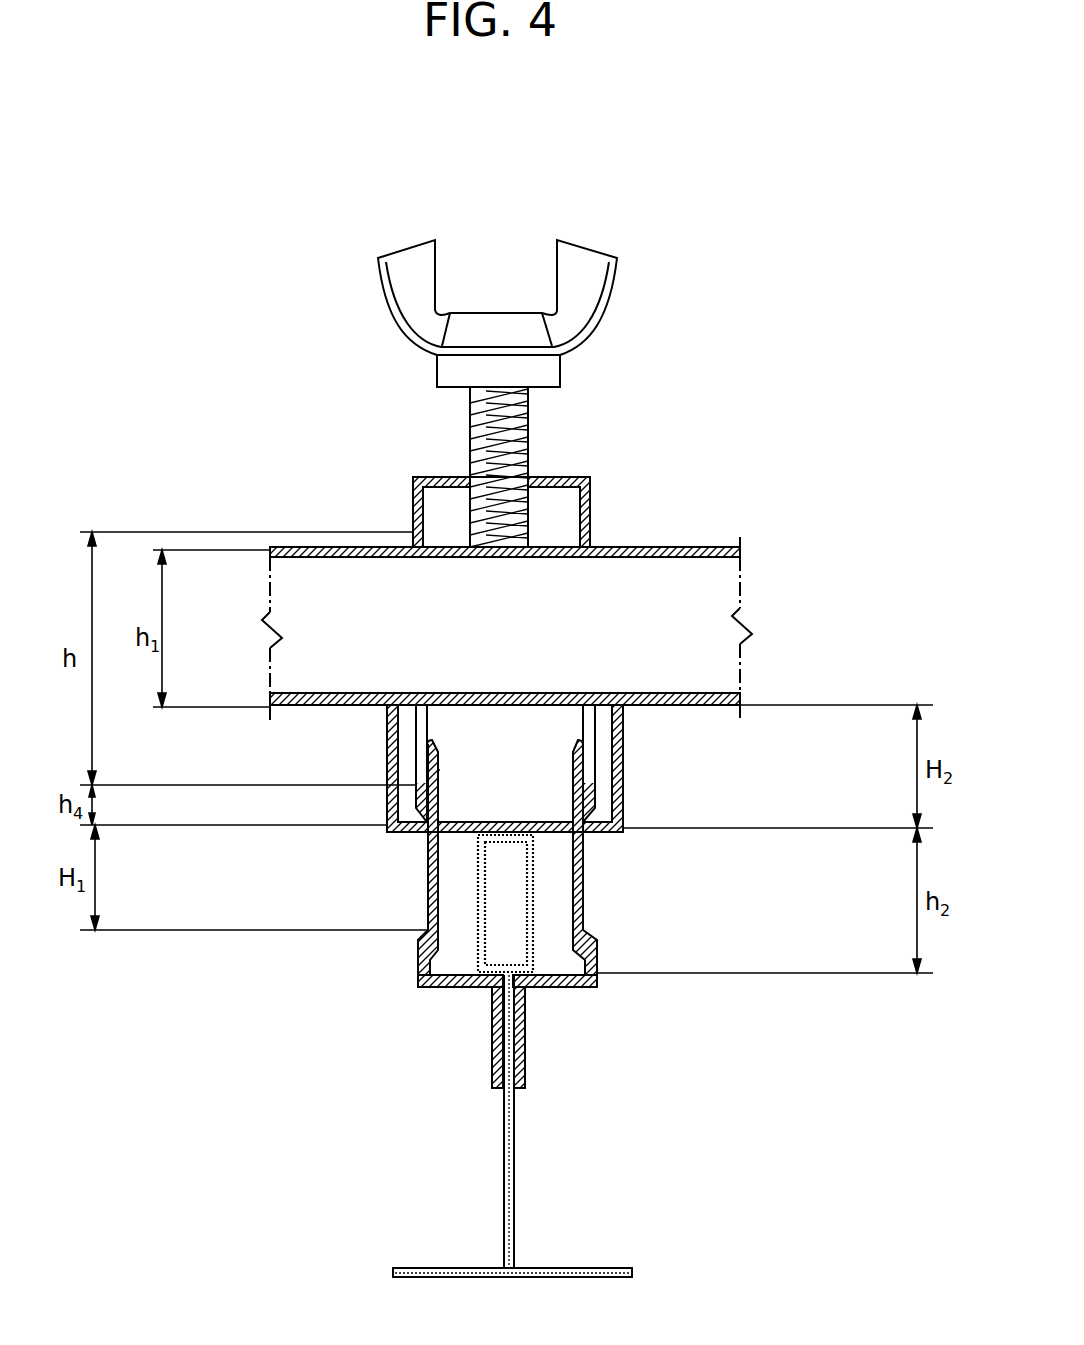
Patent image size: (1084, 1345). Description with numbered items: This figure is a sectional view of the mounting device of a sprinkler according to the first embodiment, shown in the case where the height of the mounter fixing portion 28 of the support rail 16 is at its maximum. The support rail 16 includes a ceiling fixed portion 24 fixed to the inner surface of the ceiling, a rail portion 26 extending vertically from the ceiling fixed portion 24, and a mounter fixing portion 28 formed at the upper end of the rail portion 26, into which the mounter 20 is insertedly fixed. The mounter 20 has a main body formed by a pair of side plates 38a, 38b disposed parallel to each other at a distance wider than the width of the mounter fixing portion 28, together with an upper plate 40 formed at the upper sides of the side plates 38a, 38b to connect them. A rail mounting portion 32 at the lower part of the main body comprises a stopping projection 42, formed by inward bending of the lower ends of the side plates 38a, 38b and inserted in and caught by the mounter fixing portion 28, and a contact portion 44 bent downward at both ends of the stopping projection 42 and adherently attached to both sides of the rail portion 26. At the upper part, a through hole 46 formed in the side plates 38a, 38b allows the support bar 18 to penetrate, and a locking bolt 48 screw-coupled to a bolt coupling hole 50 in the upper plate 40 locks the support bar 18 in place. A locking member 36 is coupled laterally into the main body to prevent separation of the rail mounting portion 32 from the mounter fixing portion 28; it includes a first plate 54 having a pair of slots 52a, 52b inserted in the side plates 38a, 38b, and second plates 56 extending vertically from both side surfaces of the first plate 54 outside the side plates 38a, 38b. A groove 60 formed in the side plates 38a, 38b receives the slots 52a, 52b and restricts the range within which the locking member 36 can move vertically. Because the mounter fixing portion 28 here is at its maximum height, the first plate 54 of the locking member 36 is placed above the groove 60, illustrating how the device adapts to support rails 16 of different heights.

The support rail 16 is at (512, 1126).
The support bar 18 is at (310, 545).
The mounter 20 is at (548, 472).
The ceiling fixed portion 24 is at (590, 1268).
The rail portion 26 is at (515, 1132).
The mounter fixing portion 28 is at (478, 925).
The rail mounting portion 32 is at (534, 1032).
The locking member 36 is at (566, 768).
The side plate 38a is at (415, 515).
The side plate 38b is at (590, 508).
The upper plate 40 is at (548, 472).
The stopping projection 42 is at (455, 972).
The contact portion 44 is at (492, 1067).
The through hole 46 is at (416, 737).
The locking bolt 48 is at (493, 325).
The bolt coupling hole 50 is at (535, 445).
The slot 52a is at (428, 858).
The slot 52b is at (583, 850).
The first plate 54 is at (505, 820).
The second plate 56 is at (623, 742).
The groove 60 is at (524, 916).